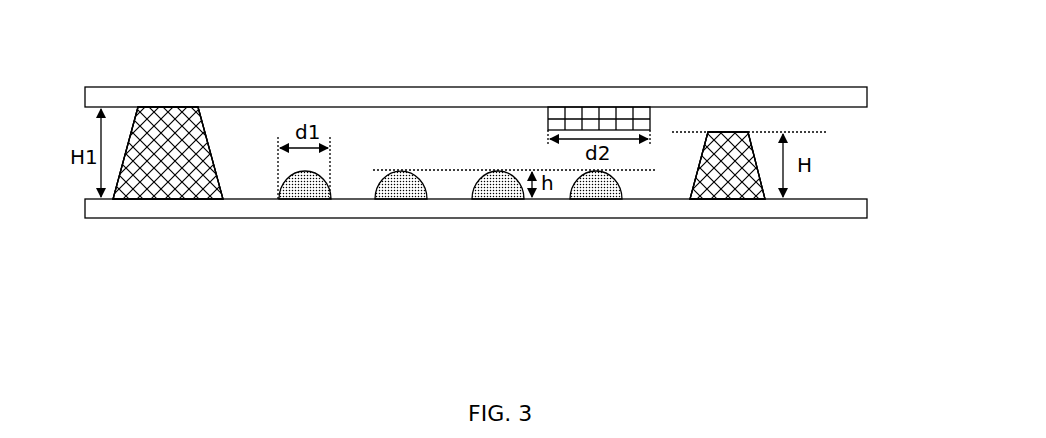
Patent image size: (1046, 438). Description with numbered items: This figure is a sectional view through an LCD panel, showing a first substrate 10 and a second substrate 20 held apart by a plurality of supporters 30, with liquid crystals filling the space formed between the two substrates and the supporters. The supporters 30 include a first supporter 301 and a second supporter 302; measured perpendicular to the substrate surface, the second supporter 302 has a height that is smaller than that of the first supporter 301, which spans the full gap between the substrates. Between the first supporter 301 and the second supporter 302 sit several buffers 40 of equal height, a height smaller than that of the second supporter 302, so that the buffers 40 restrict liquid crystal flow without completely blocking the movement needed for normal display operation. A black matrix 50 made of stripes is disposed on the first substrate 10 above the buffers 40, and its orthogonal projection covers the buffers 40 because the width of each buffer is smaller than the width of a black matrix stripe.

The first substrate 10 is at (810, 87).
The second substrate 20 is at (838, 199).
The supporters 30 is at (439, 153).
The first supporter 301 is at (168, 153).
The second supporter 302 is at (727, 165).
The buffers 40 is at (573, 198).
The black matrix 50 is at (588, 107).